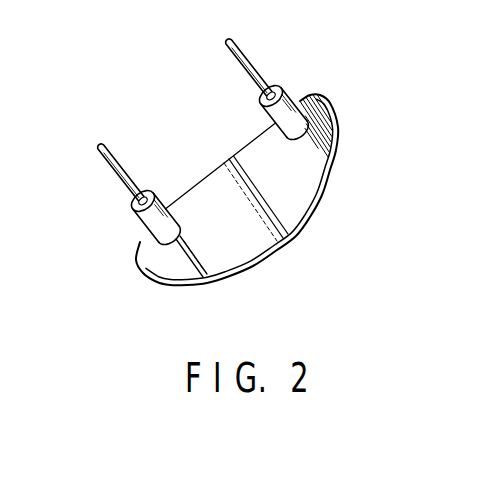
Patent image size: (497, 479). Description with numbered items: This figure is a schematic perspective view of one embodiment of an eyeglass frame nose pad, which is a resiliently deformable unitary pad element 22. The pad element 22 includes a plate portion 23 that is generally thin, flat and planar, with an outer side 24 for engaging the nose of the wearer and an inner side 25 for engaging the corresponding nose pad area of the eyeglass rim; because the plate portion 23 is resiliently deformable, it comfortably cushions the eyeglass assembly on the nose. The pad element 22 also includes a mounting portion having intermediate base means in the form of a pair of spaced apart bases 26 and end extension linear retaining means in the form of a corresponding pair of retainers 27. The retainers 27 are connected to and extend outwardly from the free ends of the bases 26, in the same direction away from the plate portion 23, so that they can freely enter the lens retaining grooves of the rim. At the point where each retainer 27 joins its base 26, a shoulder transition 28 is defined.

The pad element 22 is at (264, 262).
The plate portion 23 is at (284, 219).
The outer side 24 is at (332, 188).
The inner side 25 is at (318, 163).
The base 26 is at (290, 100).
The retainer 27 is at (242, 50).
The shoulder transition 28 is at (262, 98).